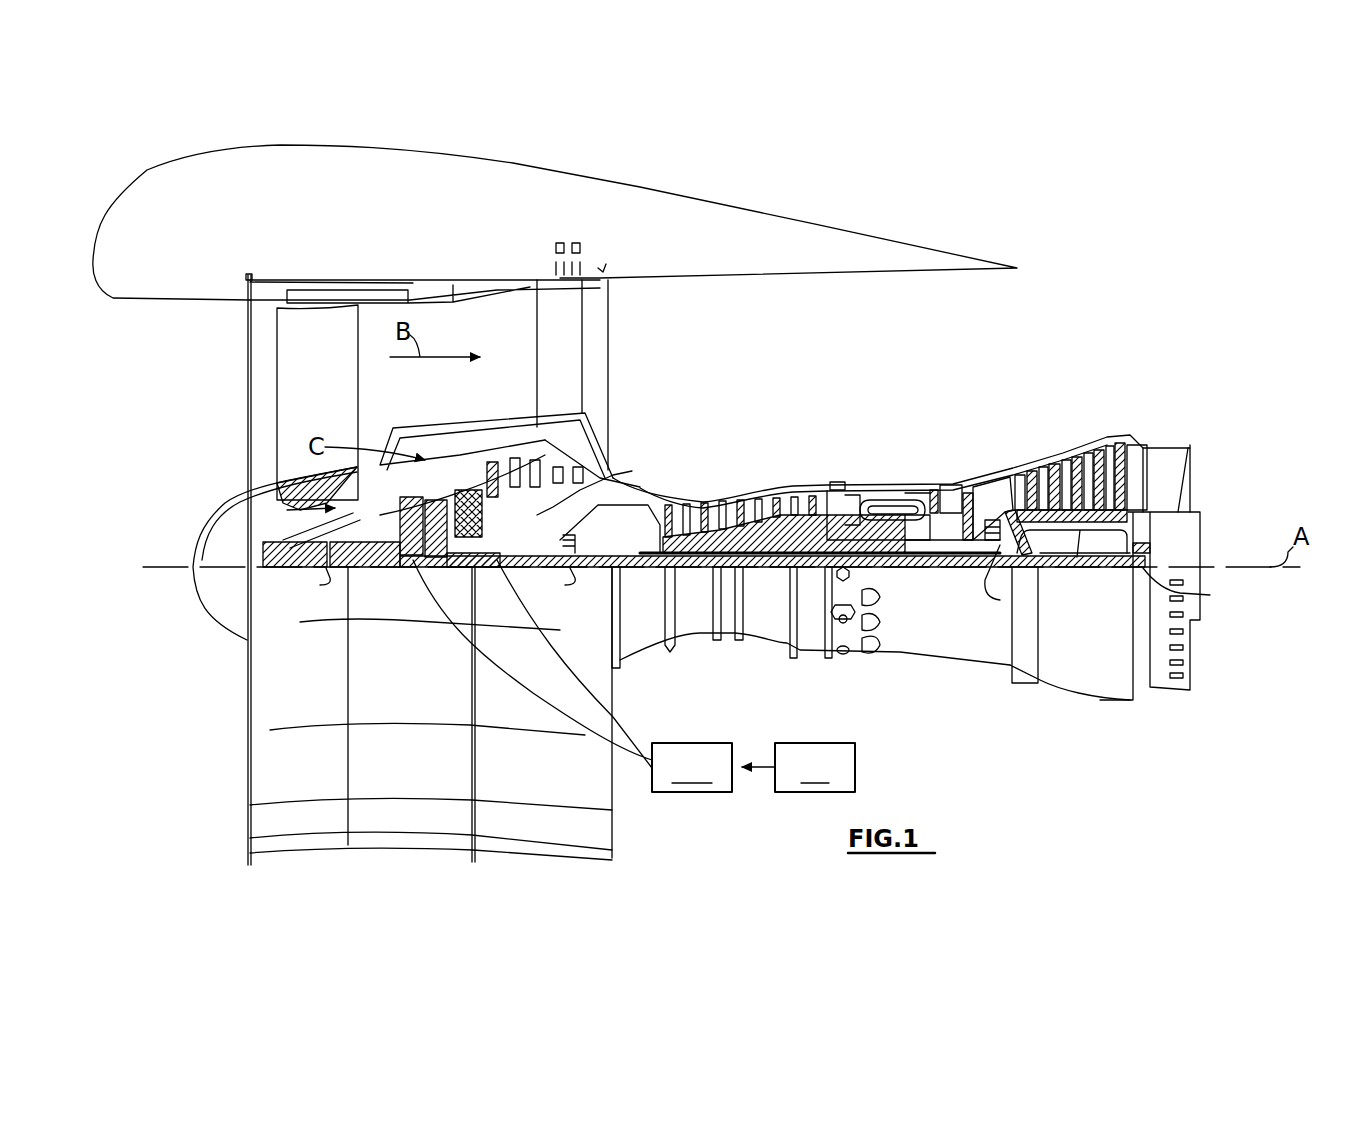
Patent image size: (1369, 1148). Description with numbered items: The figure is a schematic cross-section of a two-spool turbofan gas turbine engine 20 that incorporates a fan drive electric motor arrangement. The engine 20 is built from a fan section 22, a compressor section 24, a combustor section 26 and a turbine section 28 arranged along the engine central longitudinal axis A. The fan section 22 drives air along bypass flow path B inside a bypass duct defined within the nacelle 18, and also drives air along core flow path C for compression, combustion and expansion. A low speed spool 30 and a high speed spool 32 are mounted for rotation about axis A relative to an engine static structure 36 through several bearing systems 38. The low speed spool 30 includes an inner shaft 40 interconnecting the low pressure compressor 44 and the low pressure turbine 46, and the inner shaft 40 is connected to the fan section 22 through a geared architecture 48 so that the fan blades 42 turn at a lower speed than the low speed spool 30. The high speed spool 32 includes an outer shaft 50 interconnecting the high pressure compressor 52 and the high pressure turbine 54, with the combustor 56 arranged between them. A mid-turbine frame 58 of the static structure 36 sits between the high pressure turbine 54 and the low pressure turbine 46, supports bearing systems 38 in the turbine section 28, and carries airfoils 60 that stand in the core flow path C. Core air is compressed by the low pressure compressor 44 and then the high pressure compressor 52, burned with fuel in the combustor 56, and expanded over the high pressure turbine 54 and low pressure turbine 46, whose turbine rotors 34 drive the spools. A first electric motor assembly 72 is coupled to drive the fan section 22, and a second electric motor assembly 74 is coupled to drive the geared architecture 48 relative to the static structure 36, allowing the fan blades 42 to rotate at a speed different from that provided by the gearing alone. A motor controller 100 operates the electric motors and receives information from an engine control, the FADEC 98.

The nacelle 18 is at (558, 197).
The gas turbine engine 20 is at (1050, 200).
The fan section 22 is at (457, 257).
The compressor section 24 is at (853, 400).
The combustor section 26 is at (916, 400).
The turbine section 28 is at (1118, 400).
The low speed spool 30 is at (768, 580).
The high speed spool 32 is at (810, 527).
The turbine rotors 34 is at (1078, 540).
The engine static structure 36 is at (810, 668).
The bearing systems 38 is at (766, 583).
The inner shaft 40 is at (628, 568).
The fan blades 42 is at (334, 410).
The low pressure compressor 44 is at (548, 467).
The low pressure turbine 46 is at (1078, 445).
The geared architecture 48 is at (438, 568).
The outer shaft 50 is at (887, 560).
The high pressure compressor 52 is at (742, 535).
The high pressure turbine 54 is at (950, 490).
The combustor 56 is at (887, 507).
The mid-turbine frame 58 is at (997, 472).
The airfoils 60 is at (1005, 540).
The first electric motor assembly 72 is at (215, 545).
The second electric motor assembly 74 is at (601, 488).
The Full Authority Digital Electronic Control (FADEC) 98 is at (798, 767).
The motor controller 100 is at (572, 676).